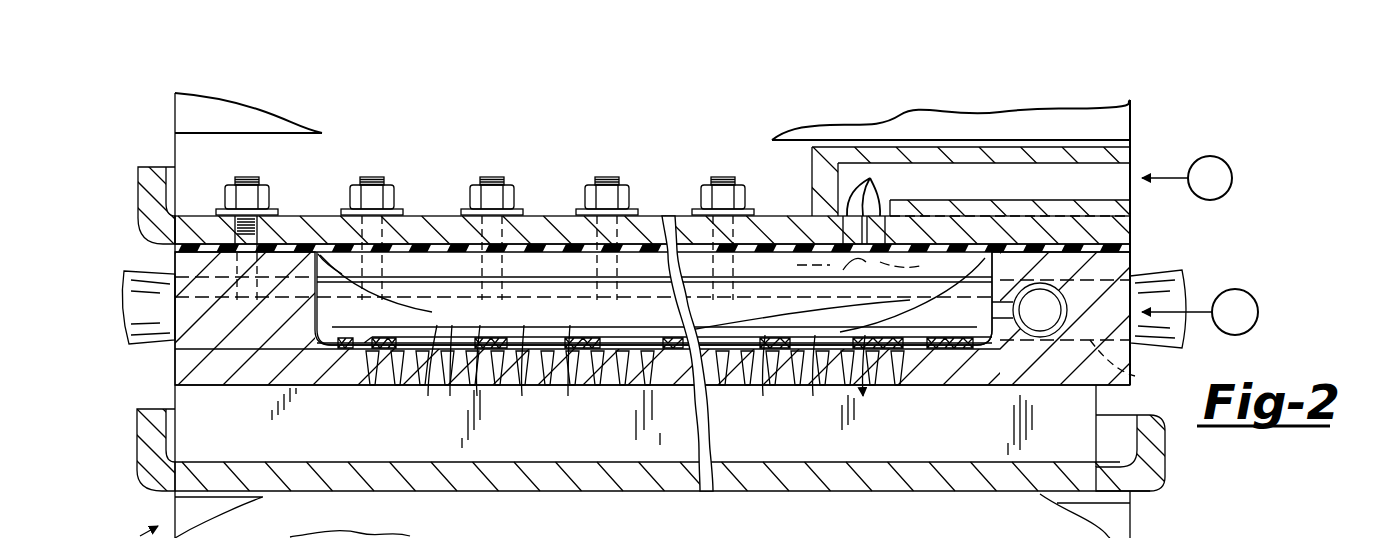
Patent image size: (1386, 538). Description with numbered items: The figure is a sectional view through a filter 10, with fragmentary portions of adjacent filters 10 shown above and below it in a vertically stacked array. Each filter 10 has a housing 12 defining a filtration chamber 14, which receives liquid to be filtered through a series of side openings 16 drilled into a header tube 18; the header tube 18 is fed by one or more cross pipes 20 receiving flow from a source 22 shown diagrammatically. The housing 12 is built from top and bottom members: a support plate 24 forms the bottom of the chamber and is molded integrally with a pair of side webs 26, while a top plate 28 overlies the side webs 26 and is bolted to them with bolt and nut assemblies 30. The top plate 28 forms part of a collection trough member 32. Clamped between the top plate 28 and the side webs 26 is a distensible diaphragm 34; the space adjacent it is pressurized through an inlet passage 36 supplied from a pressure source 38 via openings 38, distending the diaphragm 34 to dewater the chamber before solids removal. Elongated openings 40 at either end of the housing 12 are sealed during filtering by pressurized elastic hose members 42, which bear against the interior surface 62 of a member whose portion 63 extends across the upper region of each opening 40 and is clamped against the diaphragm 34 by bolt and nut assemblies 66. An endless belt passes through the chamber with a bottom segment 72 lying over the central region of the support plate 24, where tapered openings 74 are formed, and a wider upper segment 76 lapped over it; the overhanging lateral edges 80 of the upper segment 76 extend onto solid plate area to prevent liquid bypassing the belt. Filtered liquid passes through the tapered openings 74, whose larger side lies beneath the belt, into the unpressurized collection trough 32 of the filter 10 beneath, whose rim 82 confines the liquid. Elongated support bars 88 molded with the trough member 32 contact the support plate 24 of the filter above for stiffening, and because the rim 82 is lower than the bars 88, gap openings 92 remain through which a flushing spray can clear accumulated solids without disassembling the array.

The filter 10 is at (148, 124).
The housing 12 is at (175, 368).
The filtration chamber 14 is at (750, 356).
The side openings 16 is at (1013, 300).
The header tube 18 is at (1028, 337).
The cross pipes 20 is at (1118, 372).
The source 22 is at (1270, 262).
The support plate 24 is at (367, 380).
The side webs 26 is at (224, 338).
The top plate 28 is at (430, 224).
The bolt and nut assemblies 30 is at (268, 189).
The collection trough member 32 is at (142, 204).
The distensible diaphragm 34 is at (549, 244).
The inlet passage 36 is at (1046, 191).
The pressure source / openings 38 is at (1261, 133).
The elongated openings 40 is at (313, 303).
The elastic hose members 42 is at (165, 324).
The interior surface 62 is at (401, 537).
The portion 63 is at (440, 275).
The bolt and nut assemblies 66 is at (399, 158).
The bottom segment 72 is at (425, 326).
The tapered openings 74 is at (646, 360).
The upper segment 76 is at (494, 325).
The overhanging lateral edges 80 is at (362, 328).
The rim 82 is at (150, 444).
The elongated support bars 88 is at (449, 447).
The gap openings 92 is at (175, 400).